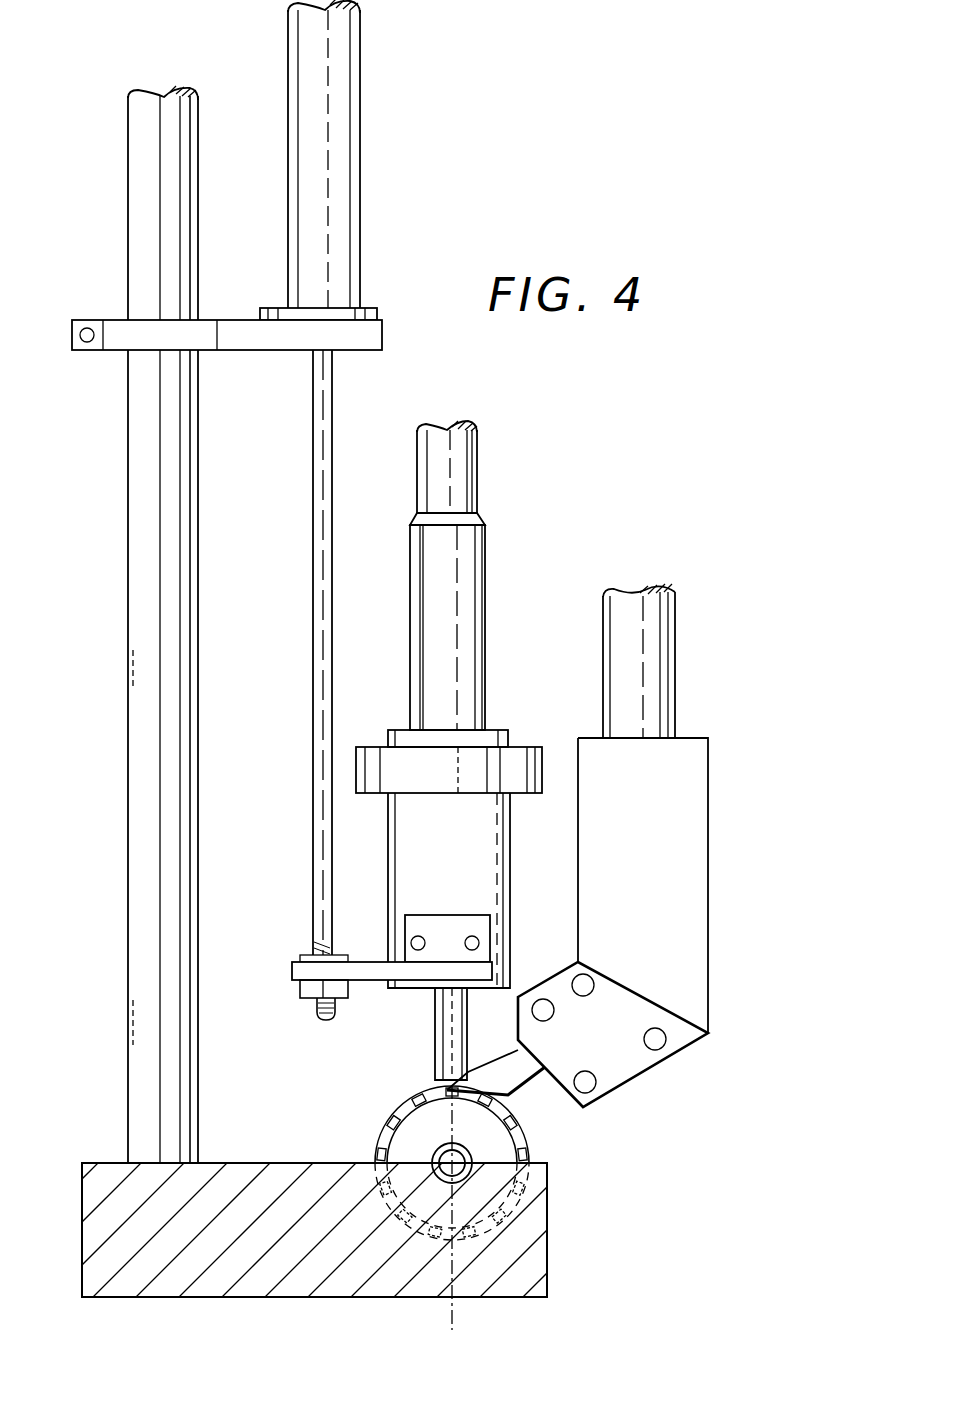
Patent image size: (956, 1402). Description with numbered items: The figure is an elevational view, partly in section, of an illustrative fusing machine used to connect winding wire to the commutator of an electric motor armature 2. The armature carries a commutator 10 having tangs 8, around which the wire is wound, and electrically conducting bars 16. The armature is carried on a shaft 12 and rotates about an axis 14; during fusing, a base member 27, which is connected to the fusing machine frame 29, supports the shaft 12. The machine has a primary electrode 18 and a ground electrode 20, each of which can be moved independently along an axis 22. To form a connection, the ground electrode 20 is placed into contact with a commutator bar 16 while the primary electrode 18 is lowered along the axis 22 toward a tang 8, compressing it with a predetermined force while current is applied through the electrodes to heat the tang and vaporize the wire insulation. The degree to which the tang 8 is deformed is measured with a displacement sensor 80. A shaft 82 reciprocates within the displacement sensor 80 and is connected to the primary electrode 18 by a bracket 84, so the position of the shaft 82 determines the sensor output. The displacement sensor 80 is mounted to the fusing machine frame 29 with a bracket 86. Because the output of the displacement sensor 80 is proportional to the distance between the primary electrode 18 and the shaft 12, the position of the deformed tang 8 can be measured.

The electric motor armature 2 is at (408, 1078).
The tangs 8 is at (513, 1114).
The commutator 10 is at (385, 1153).
The shaft 12 is at (400, 1118).
The axis 14 is at (456, 1164).
The electrically conducting bars 16 is at (455, 1146).
The primary electrode 18 is at (435, 1026).
The ground electrode 20 is at (497, 1100).
The axis 22 is at (452, 1318).
The base member 27 is at (270, 1163).
The fusing machine frame 29 is at (127, 1042).
The displacement sensor 80 is at (360, 223).
The shaft 82 is at (312, 582).
The bracket 84 is at (379, 981).
The bracket 86 is at (85, 350).